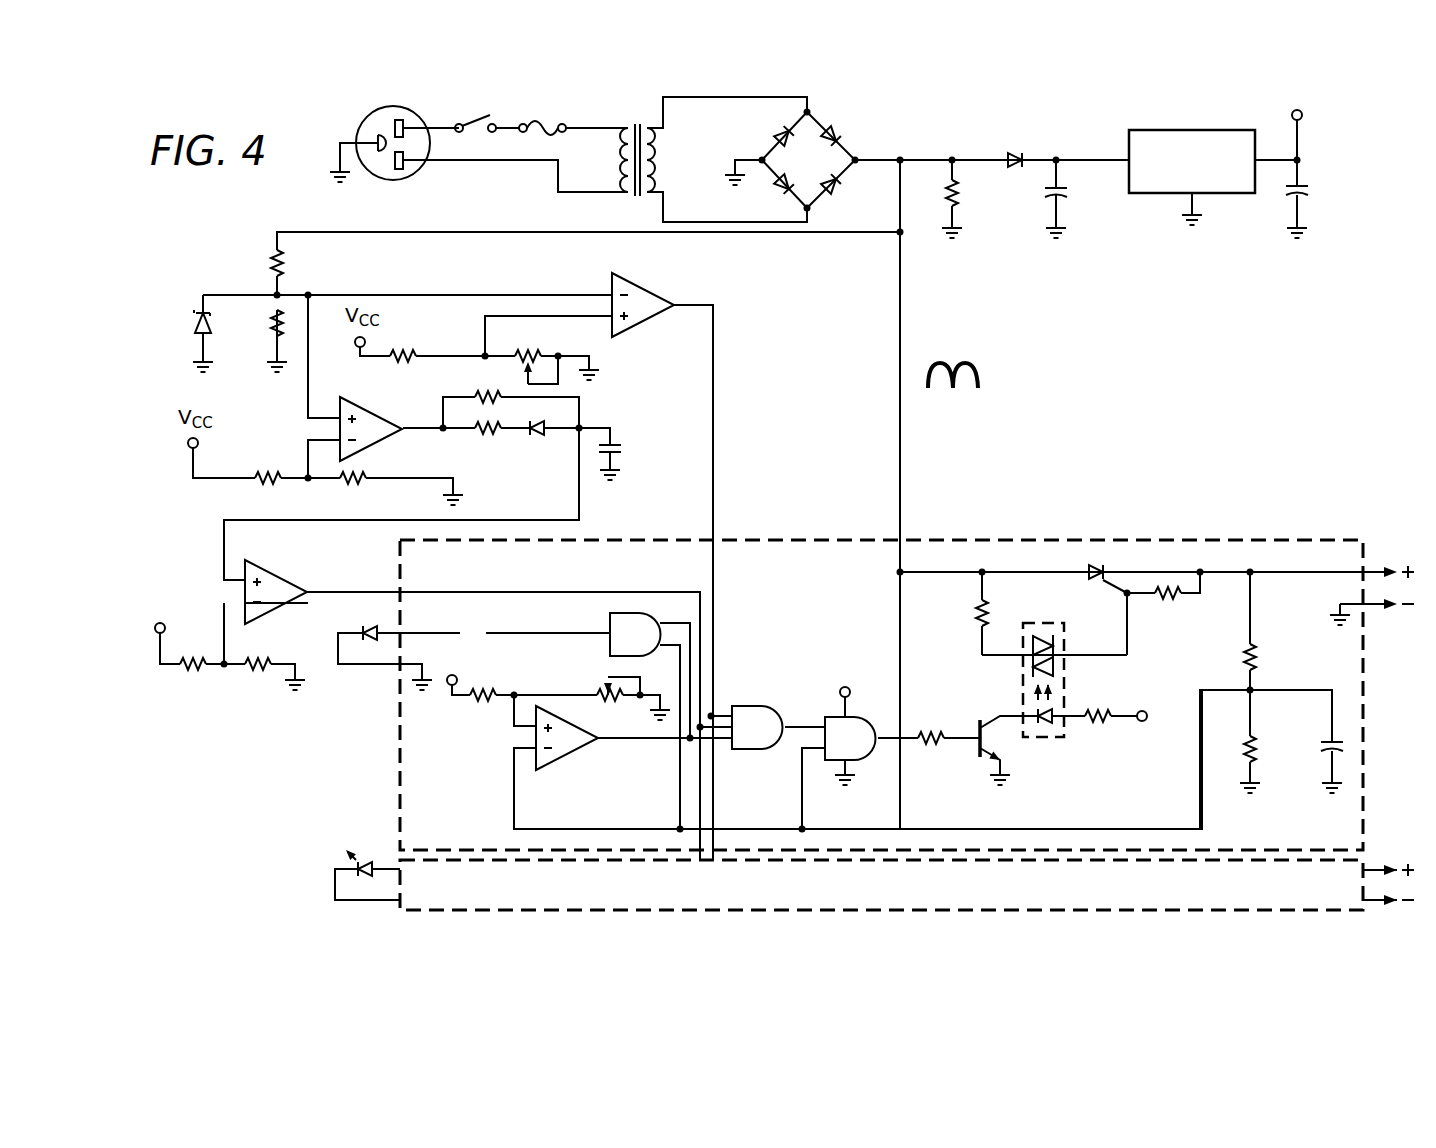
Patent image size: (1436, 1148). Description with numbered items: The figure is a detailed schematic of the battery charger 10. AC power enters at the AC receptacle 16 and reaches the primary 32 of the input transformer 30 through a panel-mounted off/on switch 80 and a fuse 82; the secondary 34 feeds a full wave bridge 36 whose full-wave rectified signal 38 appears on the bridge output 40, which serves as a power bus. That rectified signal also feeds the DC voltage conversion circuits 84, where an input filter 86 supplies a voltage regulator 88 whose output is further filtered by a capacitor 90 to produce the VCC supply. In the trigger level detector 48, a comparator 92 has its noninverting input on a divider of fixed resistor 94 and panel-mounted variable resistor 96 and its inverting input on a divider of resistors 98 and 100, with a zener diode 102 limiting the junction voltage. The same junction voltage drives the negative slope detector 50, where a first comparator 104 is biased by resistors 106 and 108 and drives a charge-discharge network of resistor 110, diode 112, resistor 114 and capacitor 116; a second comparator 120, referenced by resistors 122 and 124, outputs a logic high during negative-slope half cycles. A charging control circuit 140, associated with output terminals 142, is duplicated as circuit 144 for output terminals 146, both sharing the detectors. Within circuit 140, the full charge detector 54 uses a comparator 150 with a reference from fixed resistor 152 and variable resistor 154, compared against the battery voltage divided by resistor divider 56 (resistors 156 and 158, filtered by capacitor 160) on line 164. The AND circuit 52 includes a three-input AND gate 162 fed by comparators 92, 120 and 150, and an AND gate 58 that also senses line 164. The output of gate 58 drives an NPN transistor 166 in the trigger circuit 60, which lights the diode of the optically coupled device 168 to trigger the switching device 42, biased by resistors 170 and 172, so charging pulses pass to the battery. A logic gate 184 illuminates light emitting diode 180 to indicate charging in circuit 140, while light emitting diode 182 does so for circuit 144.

The battery charger 10 is at (208, 203).
The AC receptacle 16 is at (357, 128).
The off/on switch 80 is at (473, 113).
The fuse 82 is at (550, 122).
The input transformer 30 is at (691, 142).
The transformer primary 32 is at (579, 170).
The transformer secondary 34 is at (674, 170).
The full wave bridge 36 is at (850, 118).
The DC voltage conversion circuits 84 is at (1108, 157).
The input filter 86 is at (1026, 136).
The voltage regulator 88 is at (1215, 130).
The capacitor 90 is at (1305, 195).
The resistor 98 is at (271, 265).
The resistor 100 is at (269, 333).
The zener diode 102 is at (196, 325).
The trigger level detector 48 is at (540, 551).
The comparator 92 is at (610, 287).
The fixed resistor 94 is at (403, 362).
The variable resistor 96 is at (535, 354).
The first comparator 104 is at (387, 447).
The resistor 106 is at (260, 470).
The resistor 108 is at (358, 480).
The resistor 110 is at (490, 432).
The diode 112 is at (537, 432).
The resistor 114 is at (472, 393).
The capacitor 116 is at (627, 447).
The negative slope detector 50 is at (422, 689).
The second comparator 120 is at (278, 568).
The resistor 122 is at (190, 670).
The resistor 124 is at (262, 670).
The light emitting diode 180 is at (354, 625).
The battery charging control circuit 140 is at (817, 540).
The duplicated circuit 144 is at (860, 897).
The logic gate 184 is at (610, 625).
The full charge detector 54 is at (819, 734).
The comparator 150 is at (570, 755).
The fixed resistor 152 is at (490, 692).
The variable resistor 154 is at (603, 690).
The AND circuit 52 is at (799, 532).
The first logic AND gate 162 is at (757, 703).
The AND gate 58 is at (857, 758).
The trigger circuit 60 is at (975, 685).
The optical coupled device 168 is at (1084, 699).
The NPN transistor 166 is at (998, 745).
The gate biasing resistor 170 is at (977, 607).
The switching device 42 is at (1087, 568).
The gate biasing resistor 172 is at (1167, 597).
The resistor divider 56 is at (1251, 700).
The resistor 156 is at (1258, 656).
The resistor 158 is at (1257, 741).
The capacitor 160 is at (1323, 752).
The line 164 is at (1090, 828).
The output terminals 142 is at (1398, 548).
The output terminals 146 is at (1400, 846).
The light emitting diode 182 is at (362, 863).
The full-wave rectified signal 38 is at (962, 361).
The full-wave bridge output 40 is at (900, 406).